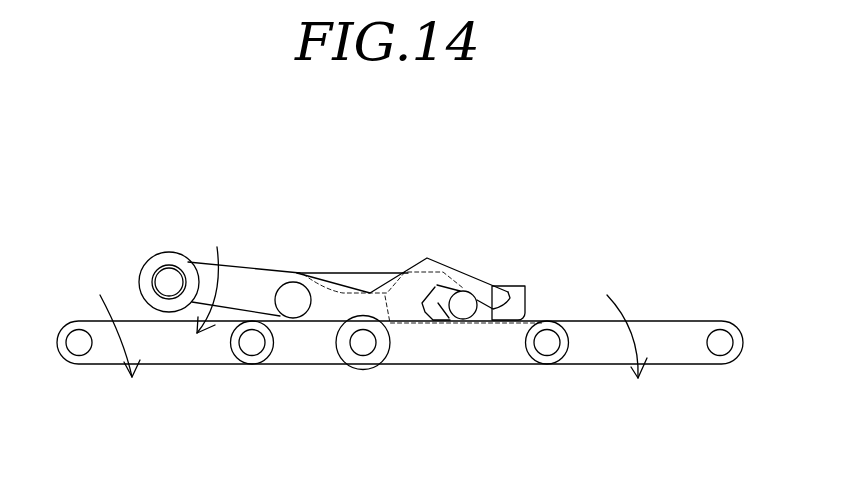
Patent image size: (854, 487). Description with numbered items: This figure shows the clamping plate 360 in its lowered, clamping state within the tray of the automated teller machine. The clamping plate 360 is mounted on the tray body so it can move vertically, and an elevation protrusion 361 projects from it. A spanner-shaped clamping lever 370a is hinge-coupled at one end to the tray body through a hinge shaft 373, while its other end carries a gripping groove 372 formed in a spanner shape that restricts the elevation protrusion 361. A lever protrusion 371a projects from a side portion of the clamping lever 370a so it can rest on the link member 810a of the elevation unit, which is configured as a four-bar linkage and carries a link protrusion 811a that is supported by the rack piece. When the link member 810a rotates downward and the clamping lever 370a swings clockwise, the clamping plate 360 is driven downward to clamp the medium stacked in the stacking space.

The clamping plate 360 is at (363, 280).
The elevation protrusion 361 is at (463, 300).
The clamping lever 370a is at (247, 278).
The lever protrusion 371a is at (287, 295).
The gripping groove 372 is at (526, 296).
The hinge shaft 373 is at (165, 278).
The link member 810a is at (298, 352).
The link protrusion 811a is at (367, 348).